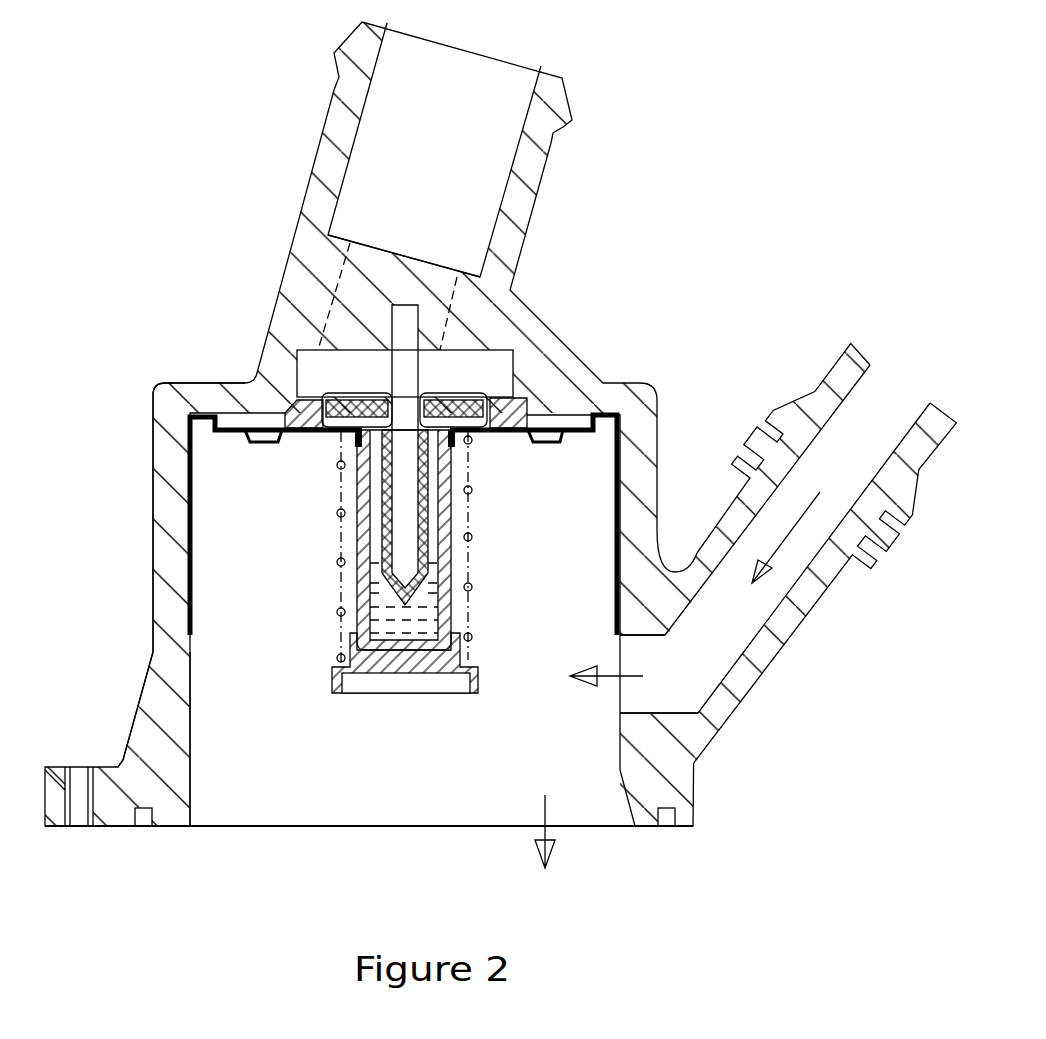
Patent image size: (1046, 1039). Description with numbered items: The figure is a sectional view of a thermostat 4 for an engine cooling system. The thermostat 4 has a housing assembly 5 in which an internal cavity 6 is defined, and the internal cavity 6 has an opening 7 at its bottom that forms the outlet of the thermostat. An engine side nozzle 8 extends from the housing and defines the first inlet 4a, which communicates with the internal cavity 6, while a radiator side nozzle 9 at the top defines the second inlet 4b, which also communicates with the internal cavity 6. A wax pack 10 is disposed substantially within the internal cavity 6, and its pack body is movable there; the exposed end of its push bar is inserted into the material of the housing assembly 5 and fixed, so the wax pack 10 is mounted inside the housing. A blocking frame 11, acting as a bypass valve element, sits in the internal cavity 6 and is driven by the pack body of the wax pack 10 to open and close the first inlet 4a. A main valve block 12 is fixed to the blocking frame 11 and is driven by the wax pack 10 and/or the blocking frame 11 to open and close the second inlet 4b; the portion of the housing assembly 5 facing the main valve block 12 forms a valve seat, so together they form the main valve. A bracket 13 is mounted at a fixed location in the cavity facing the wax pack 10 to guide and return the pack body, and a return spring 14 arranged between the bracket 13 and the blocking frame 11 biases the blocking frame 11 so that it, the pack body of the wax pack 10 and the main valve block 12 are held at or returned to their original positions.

The thermostat 4 is at (207, 168).
The first inlet 4a is at (647, 669).
The second inlet 4b is at (404, 195).
The housing assembly 5 is at (203, 395).
The internal cavity 6 is at (218, 702).
The opening 7 is at (390, 813).
The engine side nozzle 8 is at (810, 400).
The radiator side nozzle 9 is at (530, 182).
The wax pack 10 is at (455, 525).
The blocking frame 11 is at (197, 578).
The main valve block 12 is at (512, 432).
The bracket 13 is at (480, 680).
The return spring 14 is at (340, 612).